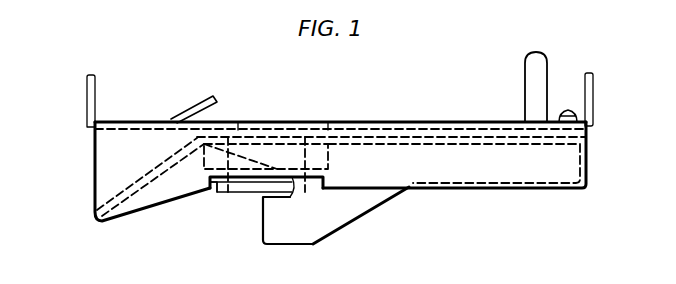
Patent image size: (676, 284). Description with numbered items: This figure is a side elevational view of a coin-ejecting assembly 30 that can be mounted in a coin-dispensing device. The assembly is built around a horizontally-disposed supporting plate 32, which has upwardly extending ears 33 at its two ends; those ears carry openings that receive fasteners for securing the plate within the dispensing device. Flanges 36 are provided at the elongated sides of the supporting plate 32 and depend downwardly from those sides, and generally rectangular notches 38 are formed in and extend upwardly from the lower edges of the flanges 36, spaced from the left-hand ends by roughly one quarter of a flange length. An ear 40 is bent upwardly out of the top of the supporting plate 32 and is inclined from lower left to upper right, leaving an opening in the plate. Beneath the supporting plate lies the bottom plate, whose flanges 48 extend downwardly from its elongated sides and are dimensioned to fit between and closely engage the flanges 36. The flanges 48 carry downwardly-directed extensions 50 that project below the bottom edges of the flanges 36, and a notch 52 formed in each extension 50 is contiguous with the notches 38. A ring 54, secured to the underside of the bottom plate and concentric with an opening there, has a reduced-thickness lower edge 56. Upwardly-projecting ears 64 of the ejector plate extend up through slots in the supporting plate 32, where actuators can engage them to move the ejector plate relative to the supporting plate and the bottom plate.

The coin-ejecting assembly 30 is at (356, 93).
The supporting plate 32 is at (480, 122).
The ears 33 is at (87, 90).
The flanges 36 is at (100, 175).
The notches 38 is at (210, 183).
The ear 40 is at (209, 97).
The flanges 48 is at (540, 183).
The extensions 50 is at (332, 232).
The notch 52 is at (297, 197).
The ring 54 is at (328, 163).
The reduced-thickness lower edge 56 is at (220, 193).
The ears 64 is at (538, 63).